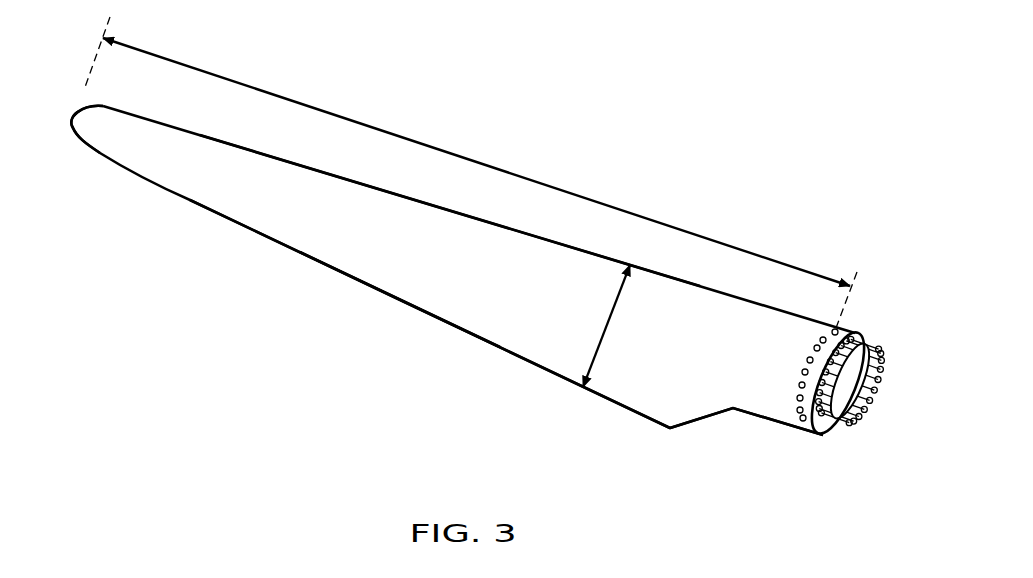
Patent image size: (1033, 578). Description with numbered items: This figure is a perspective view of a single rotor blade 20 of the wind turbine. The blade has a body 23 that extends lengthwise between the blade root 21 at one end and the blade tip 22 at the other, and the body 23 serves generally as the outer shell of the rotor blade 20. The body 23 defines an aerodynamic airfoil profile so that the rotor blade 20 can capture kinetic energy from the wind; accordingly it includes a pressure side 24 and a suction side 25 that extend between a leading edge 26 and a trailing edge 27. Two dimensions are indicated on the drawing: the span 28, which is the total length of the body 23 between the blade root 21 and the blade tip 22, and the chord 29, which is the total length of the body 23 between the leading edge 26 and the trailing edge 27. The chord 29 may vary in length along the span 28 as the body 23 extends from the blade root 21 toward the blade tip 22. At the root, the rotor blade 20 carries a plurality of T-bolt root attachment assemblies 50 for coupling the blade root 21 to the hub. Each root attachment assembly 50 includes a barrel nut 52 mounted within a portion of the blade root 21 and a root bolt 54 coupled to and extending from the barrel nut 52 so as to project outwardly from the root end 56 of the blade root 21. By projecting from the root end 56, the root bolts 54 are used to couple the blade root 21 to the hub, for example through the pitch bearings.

The rotor blade 20 is at (699, 178).
The blade root 21 is at (790, 427).
The blade tip 22 is at (75, 115).
The body 23 is at (368, 209).
The pressure side 24 is at (487, 322).
The suction side 25 is at (284, 249).
The leading edge 26 is at (510, 227).
The trailing edge 27 is at (368, 286).
The span 28 is at (445, 150).
The chord 29 is at (607, 328).
The root attachment assembly 50 is at (791, 378).
The barrel nut 52 is at (885, 365).
The root bolt 54 is at (827, 330).
The root end 56 is at (827, 436).